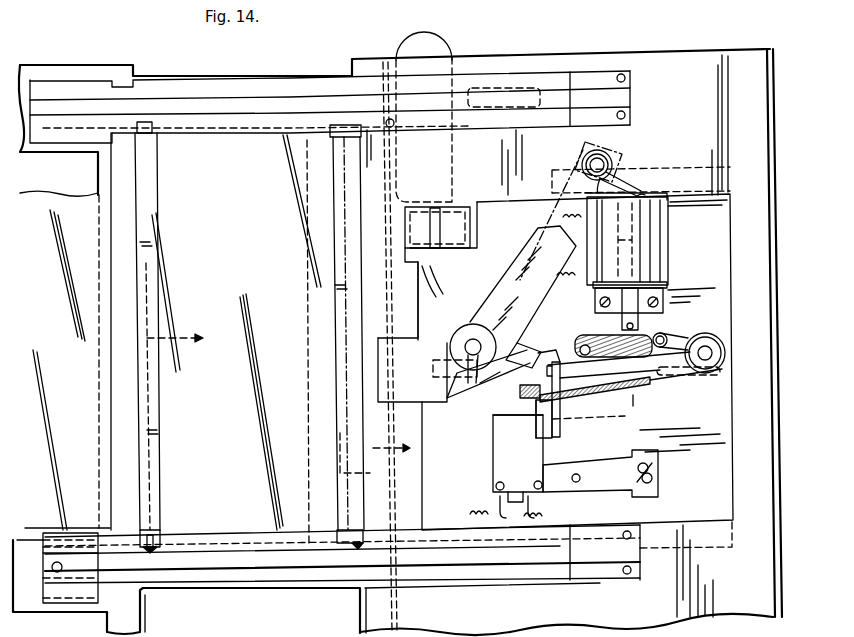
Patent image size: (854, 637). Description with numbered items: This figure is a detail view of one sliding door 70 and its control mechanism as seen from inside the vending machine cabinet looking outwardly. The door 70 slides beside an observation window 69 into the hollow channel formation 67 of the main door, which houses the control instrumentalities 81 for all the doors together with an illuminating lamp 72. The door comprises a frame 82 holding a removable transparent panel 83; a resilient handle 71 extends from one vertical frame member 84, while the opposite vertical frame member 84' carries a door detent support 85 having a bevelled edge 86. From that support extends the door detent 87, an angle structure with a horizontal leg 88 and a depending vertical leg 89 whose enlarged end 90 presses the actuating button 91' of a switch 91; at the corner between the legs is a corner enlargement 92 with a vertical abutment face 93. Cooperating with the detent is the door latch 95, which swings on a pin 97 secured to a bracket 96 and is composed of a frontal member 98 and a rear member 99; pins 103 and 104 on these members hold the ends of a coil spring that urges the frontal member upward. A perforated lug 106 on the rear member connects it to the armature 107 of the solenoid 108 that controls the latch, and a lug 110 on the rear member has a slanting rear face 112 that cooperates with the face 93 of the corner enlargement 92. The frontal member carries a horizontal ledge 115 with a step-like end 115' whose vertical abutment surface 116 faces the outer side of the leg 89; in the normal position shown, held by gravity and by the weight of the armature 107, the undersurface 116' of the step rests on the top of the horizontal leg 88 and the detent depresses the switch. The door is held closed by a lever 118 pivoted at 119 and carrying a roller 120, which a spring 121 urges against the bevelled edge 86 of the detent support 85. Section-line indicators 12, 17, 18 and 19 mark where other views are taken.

The hollow channel-shaped formation 67 is at (693, 95).
The observation window 69 is at (75, 392).
The sliding door 70 is at (274, 560).
The resilient operating handle 71 is at (150, 394).
The illuminating lamp 72 is at (426, 33).
The control instrumentalities 81 is at (650, 161).
The door frame 82 is at (310, 545).
The transparent panel 83 is at (248, 245).
The vertical frame member 84 is at (172, 337).
The opposite vertical frame member 84' is at (349, 337).
The door detent support 85 is at (425, 408).
The bevelled edge 86 is at (466, 338).
The door detent 87 is at (480, 385).
The horizontal leg 88 is at (505, 342).
The vertical leg 89 is at (558, 398).
The enlarged end portion 90 is at (562, 416).
The switch 91 is at (500, 466).
The actuating button 91' is at (600, 466).
The corner enlargement 92 is at (535, 402).
The vertical abutment face 93 is at (520, 388).
The door latch 95 is at (629, 397).
The bracket 96 is at (710, 258).
The pin 97 is at (706, 360).
The frontal latch member 98 is at (644, 388).
The rear latch member 99 is at (610, 390).
The spring pin 103 is at (683, 337).
The spring pin 104 is at (668, 387).
The perforated lug 106 is at (622, 324).
The armature 107 is at (661, 334).
The solenoid 108 is at (652, 233).
The lug 110 is at (493, 421).
The slanting rear face 112 is at (537, 410).
The horizontal ledge 115 is at (613, 359).
The step-like end 115' is at (534, 351).
The vertical abutment surface 116 is at (619, 367).
The undersurface 116' is at (498, 386).
The lever 118 is at (512, 290).
The pivot 119 is at (600, 160).
The roller 120 is at (458, 330).
The spring 121 is at (652, 172).
The section line 12 is at (70, 40).
The section line 17 is at (372, 190).
The section line 18 is at (50, 305).
The section line 19 is at (665, 37).